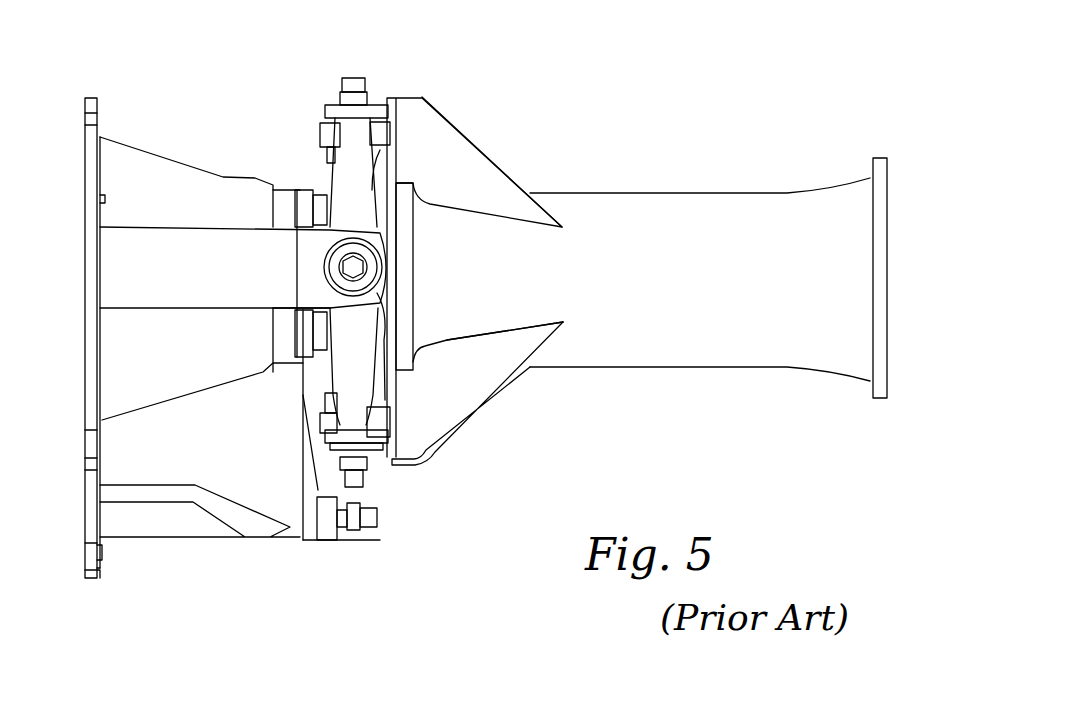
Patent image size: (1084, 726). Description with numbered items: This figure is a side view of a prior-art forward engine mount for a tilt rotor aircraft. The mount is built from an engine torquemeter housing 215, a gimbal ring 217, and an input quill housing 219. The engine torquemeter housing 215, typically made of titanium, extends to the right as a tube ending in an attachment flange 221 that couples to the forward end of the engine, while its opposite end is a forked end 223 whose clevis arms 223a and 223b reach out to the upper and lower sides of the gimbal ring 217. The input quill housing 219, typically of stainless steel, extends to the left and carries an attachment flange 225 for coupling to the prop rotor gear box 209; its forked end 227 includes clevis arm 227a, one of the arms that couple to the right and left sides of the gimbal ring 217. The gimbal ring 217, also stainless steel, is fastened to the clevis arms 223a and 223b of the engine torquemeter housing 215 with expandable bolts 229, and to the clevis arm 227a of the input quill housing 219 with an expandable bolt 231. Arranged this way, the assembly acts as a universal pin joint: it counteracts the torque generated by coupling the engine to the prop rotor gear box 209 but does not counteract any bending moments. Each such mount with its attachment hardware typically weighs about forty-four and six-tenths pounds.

The prop rotor gear box 209 is at (103, 570).
The engine torquemeter housing 215 is at (642, 182).
The gimbal ring 217 is at (327, 173).
The input quill housing 219 is at (180, 163).
The attachment flange 221 is at (873, 170).
The forked end 223 is at (458, 383).
The clevis arm 223a is at (397, 157).
The clevis arm 223b is at (387, 443).
The attachment flange 225 is at (92, 97).
The forked end 227 is at (248, 312).
The clevis arm 227a is at (290, 307).
The expandable bolts 229 is at (360, 80).
The expandable bolts 231 is at (370, 253).